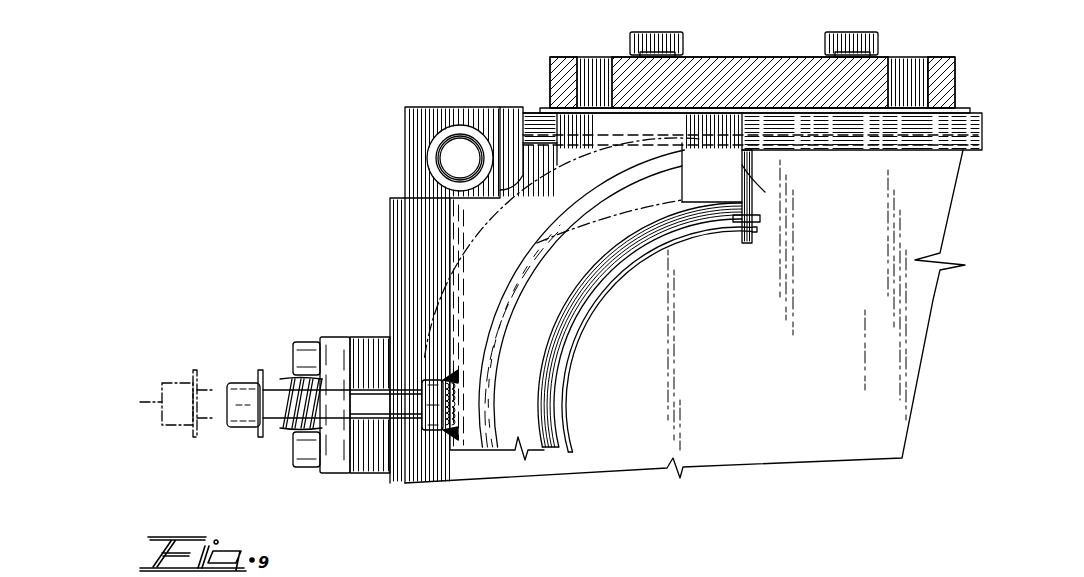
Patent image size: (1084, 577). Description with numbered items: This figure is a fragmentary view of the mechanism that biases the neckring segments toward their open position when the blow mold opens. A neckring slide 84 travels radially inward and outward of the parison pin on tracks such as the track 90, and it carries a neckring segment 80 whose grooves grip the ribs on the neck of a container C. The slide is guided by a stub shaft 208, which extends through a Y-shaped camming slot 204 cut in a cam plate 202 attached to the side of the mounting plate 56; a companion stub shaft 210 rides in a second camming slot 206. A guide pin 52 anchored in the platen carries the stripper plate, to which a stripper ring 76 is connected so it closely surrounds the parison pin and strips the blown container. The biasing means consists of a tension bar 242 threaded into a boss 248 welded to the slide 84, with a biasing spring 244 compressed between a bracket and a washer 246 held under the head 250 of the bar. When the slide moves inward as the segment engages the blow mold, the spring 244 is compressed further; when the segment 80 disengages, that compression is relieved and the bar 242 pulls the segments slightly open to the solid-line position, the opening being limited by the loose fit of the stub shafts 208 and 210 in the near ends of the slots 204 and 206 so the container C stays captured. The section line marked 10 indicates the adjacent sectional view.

The cam plate 202 is at (725, 66).
The camming slot 204 is at (612, 82).
The camming slot 206 is at (917, 72).
The stub shaft 208 is at (657, 37).
The stub shaft 210 is at (827, 40).
The track 90 is at (893, 148).
The neckring slide 84 is at (448, 232).
The guide pin 52 is at (445, 153).
The neckring segment 80 is at (742, 195).
The stripper ring 76 is at (577, 342).
The container C is at (573, 403).
The mounting plate 56 is at (796, 458).
The boss 248 is at (420, 378).
The tension bar 242 is at (350, 473).
The biasing spring 244 is at (290, 385).
The washer 246 is at (260, 432).
The head 250 is at (242, 385).
The section line 10- 10 is at (150, 402).